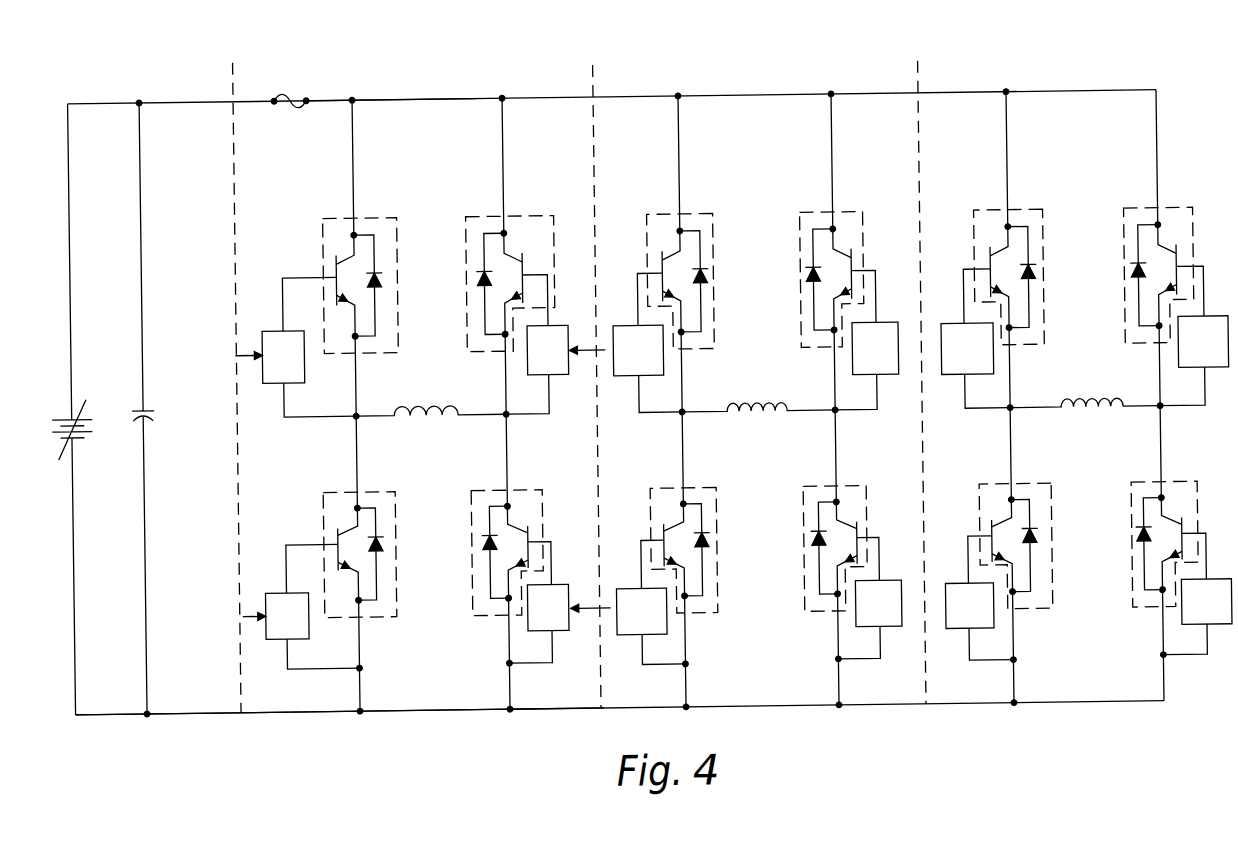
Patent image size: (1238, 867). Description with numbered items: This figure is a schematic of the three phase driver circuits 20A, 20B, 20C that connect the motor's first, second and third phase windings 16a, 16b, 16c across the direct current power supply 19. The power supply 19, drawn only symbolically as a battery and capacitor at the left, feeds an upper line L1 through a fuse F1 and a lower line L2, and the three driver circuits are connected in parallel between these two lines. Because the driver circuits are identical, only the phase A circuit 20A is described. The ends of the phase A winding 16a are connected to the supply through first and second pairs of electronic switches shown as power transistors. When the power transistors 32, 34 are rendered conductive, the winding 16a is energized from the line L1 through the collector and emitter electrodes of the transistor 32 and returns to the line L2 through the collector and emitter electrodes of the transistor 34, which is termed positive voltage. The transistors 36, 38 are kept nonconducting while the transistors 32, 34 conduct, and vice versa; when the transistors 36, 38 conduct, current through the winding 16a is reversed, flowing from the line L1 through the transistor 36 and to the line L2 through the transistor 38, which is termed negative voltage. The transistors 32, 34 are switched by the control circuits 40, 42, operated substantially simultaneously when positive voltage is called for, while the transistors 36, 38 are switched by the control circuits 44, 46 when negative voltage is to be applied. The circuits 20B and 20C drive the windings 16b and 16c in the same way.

The direct current power supply 19 is at (149, 89).
The fuse F1 is at (290, 88).
The line L1 is at (402, 97).
The line L2 is at (400, 709).
The phase driver circuit 20A is at (492, 90).
The phase driver circuit 20B is at (749, 87).
The phase driver circuit 20C is at (961, 91).
The power transistor 32 is at (345, 292).
The power transistor 34 is at (522, 556).
The power transistor 36 is at (518, 290).
The power transistor 38 is at (342, 530).
The control circuit 40 is at (277, 367).
The control circuit 42 is at (538, 620).
The control circuit 44 is at (541, 363).
The control circuit 46 is at (277, 625).
The first phase winding 16a is at (410, 416).
The second phase winding 16b is at (743, 414).
The third phase winding 16c is at (1083, 414).